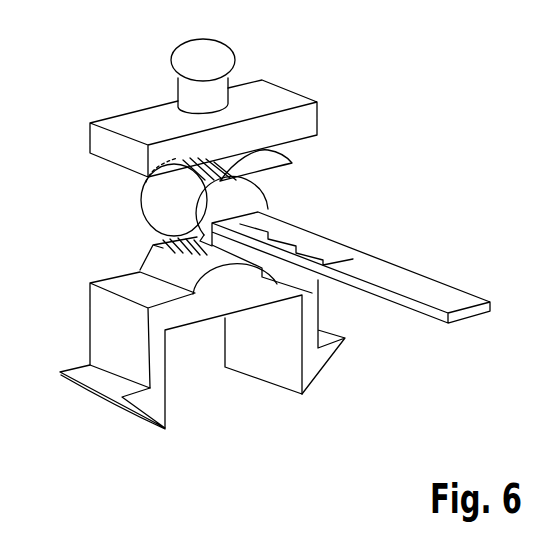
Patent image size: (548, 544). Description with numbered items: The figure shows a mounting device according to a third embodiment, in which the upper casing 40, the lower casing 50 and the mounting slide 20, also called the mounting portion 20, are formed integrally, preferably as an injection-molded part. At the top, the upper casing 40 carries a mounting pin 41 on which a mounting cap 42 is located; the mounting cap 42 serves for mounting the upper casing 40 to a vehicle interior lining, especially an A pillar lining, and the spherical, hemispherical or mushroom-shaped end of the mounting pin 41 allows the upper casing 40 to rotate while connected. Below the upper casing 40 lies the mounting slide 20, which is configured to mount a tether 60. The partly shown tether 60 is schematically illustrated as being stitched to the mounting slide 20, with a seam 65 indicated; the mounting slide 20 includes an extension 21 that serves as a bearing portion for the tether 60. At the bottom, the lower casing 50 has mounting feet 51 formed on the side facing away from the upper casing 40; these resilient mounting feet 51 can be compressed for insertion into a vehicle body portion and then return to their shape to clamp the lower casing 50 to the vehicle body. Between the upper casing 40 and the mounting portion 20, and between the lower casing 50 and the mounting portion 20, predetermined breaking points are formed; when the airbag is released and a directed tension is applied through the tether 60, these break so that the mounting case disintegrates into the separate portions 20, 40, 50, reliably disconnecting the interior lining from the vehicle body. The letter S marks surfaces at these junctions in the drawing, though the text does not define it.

The mounting slide 20 is at (254, 200).
The extension 21 is at (292, 272).
The upper casing 40 is at (288, 102).
The mounting pin 41 is at (190, 97).
The mounting cap 42 is at (190, 52).
The lower casing 50 is at (110, 322).
The mounting feet 51 is at (160, 412).
The tether 60 is at (467, 303).
The seam 65 is at (340, 251).
The contact surface S is at (292, 163).